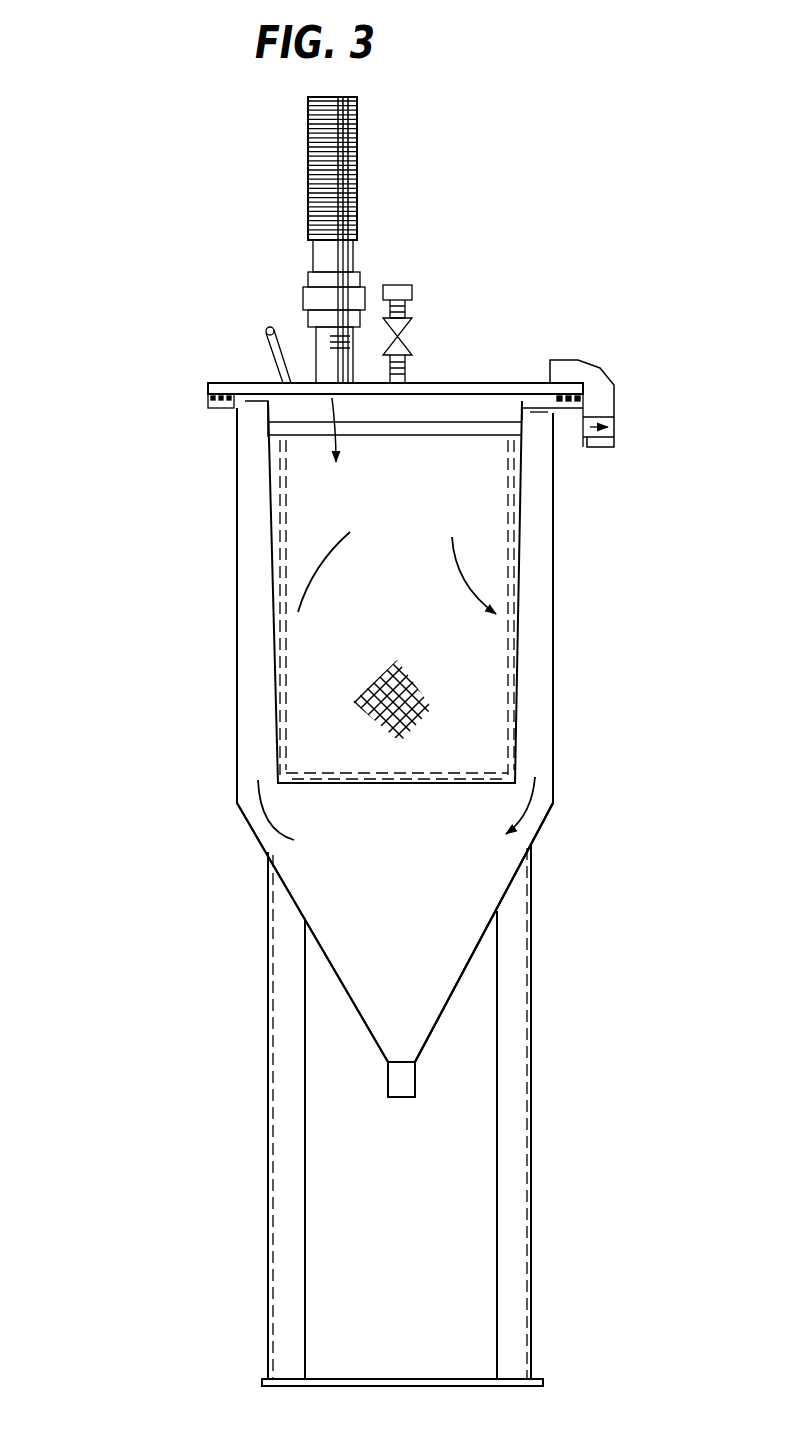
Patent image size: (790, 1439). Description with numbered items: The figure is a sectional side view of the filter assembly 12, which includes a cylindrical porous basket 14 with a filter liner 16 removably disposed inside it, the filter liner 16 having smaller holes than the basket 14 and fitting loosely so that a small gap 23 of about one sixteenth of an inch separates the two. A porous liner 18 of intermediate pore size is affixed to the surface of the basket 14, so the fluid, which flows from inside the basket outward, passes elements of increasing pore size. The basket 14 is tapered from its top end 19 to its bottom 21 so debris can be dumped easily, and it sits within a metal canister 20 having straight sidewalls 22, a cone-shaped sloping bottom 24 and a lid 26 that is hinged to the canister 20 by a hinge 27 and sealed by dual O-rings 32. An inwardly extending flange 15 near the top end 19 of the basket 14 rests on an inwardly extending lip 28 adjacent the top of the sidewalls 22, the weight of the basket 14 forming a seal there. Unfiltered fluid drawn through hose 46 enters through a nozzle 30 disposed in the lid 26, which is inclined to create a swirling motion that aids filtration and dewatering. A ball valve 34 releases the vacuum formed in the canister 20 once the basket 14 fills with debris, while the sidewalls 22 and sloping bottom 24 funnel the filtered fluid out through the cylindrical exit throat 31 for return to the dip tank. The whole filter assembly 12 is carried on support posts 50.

The filter assembly 12 is at (126, 550).
The porous basket 14 is at (545, 735).
The inwardly extending flange 15 is at (537, 410).
The filter liner 16 is at (518, 732).
The porous liner 18 is at (512, 600).
The top end 19 is at (425, 422).
The canister 20 is at (303, 803).
The bottom 21 is at (423, 784).
The straight sidewalls 22 is at (555, 582).
The gap 23 is at (475, 778).
The sloping bottom 24 is at (507, 900).
The lid 26 is at (497, 381).
The hinge 27 is at (607, 392).
The inwardly extending lip 28 is at (545, 417).
The nozzle 30 is at (312, 345).
The cylindrical exit throat 31 is at (405, 1080).
The dual O-rings 32 is at (208, 384).
The ball valve 34 is at (412, 345).
The hose 46 is at (358, 124).
The support posts 50 is at (305, 1215).